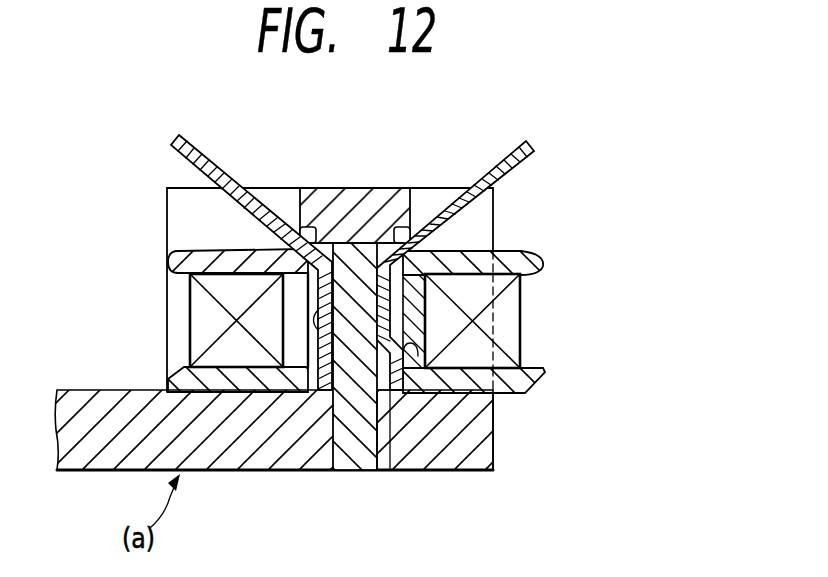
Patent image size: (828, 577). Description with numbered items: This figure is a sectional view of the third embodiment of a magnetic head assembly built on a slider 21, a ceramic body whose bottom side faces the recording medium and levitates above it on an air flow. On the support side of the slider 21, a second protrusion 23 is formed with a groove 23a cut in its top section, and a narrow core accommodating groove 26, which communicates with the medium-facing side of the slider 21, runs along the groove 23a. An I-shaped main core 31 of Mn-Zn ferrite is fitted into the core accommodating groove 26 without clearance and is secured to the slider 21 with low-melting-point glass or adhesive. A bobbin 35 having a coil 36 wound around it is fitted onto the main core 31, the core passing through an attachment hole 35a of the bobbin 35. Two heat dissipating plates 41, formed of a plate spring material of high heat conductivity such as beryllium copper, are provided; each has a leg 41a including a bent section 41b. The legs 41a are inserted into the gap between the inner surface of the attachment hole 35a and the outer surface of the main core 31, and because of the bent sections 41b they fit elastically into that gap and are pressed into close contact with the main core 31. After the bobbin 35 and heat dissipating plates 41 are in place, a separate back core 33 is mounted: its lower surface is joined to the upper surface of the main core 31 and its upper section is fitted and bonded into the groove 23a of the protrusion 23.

The slider 21 is at (99, 480).
The second protrusion 23 is at (167, 226).
The groove 23a is at (305, 230).
The core accommodating groove 26 is at (390, 446).
The main core 31 is at (352, 466).
The back core 33 is at (368, 188).
The bobbin 35 is at (517, 258).
The attachment hole 35a is at (230, 392).
The coil 36 is at (517, 317).
The heat dissipating plate 41 is at (206, 157).
The leg 41a is at (318, 298).
The bent section 41b is at (307, 338).